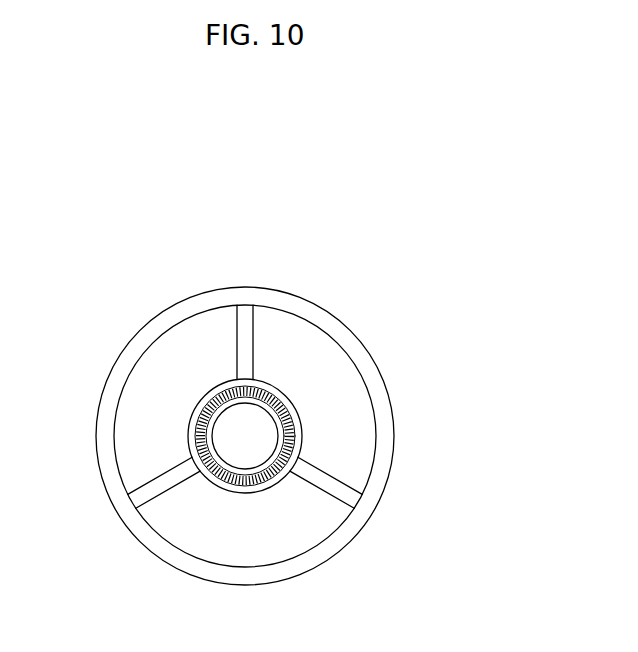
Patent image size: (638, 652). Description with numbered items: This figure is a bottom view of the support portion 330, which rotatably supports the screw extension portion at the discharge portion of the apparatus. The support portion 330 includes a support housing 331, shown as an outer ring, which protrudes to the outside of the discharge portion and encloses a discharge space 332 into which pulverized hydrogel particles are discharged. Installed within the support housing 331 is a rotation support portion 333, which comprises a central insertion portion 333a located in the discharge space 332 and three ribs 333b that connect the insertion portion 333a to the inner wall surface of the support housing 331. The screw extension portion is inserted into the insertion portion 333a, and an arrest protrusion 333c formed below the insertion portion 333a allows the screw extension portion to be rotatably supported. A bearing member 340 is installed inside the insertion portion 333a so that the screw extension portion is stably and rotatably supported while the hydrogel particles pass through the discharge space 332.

The support portion 330 is at (357, 281).
The support housing 331 is at (95, 436).
The discharge space 332 is at (153, 380).
The rotation support portion 333 is at (278, 436).
The insertion portion 333a is at (225, 489).
The ribs 333b is at (239, 333).
The arrest protrusion 333c is at (248, 470).
The bearing member 340 is at (259, 392).